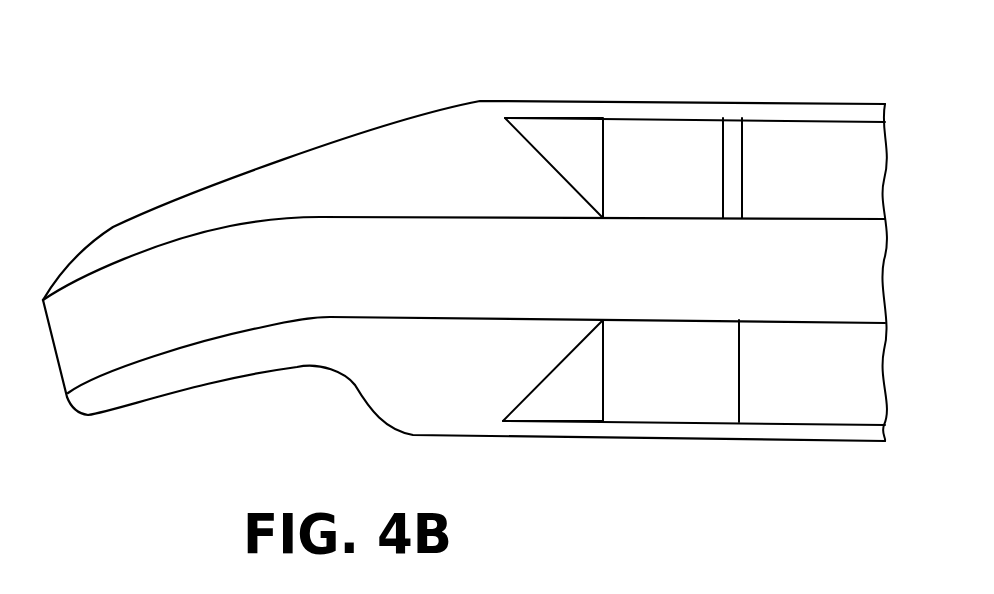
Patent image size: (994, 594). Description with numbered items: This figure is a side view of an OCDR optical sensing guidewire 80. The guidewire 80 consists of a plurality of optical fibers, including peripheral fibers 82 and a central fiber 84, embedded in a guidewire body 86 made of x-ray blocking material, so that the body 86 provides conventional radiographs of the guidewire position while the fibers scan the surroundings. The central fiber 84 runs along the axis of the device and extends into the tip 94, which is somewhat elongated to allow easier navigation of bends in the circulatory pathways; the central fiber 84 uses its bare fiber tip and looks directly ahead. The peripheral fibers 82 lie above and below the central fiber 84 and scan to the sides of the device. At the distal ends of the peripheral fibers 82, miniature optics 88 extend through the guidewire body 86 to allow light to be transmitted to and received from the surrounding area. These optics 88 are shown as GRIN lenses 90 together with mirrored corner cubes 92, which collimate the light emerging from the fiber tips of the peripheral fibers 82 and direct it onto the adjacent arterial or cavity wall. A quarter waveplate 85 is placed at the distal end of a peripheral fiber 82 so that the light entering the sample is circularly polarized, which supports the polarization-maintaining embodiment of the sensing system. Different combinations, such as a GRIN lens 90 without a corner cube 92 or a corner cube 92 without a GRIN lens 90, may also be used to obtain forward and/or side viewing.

The guidewire 80 is at (201, 108).
The peripheral fibers 82 is at (840, 178).
The central fiber 84 is at (408, 279).
The quarter waveplate 85 is at (732, 137).
The guidewire body 86 is at (474, 173).
The miniature optics 88 is at (643, 458).
The GRIN lens 90 is at (682, 392).
The mirrored corner cube 92 is at (568, 140).
The tip 94 is at (197, 377).